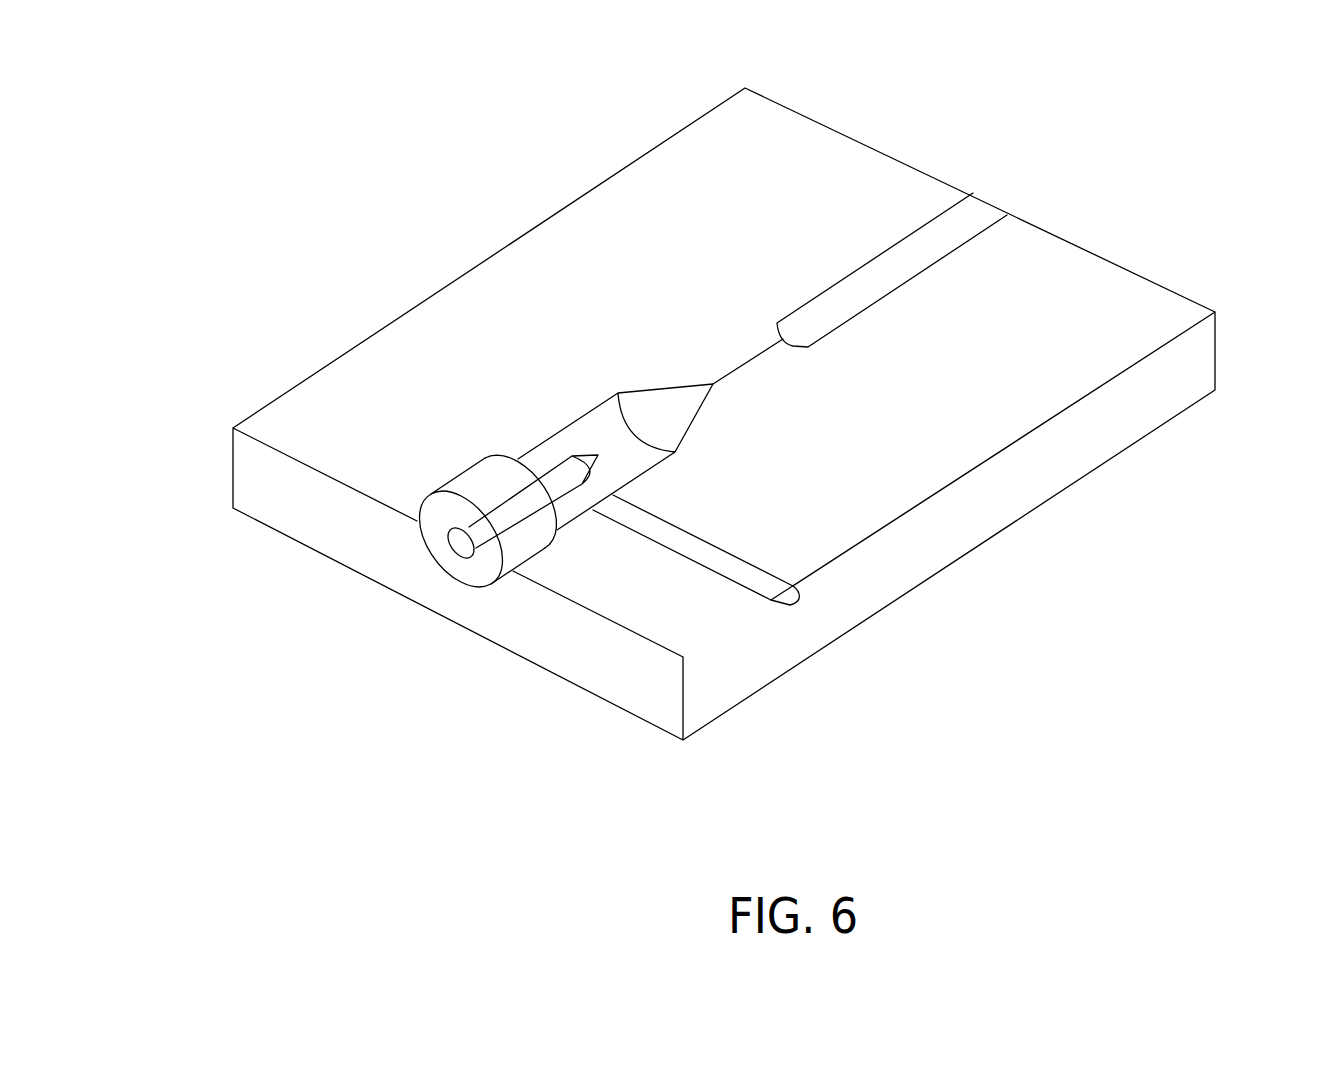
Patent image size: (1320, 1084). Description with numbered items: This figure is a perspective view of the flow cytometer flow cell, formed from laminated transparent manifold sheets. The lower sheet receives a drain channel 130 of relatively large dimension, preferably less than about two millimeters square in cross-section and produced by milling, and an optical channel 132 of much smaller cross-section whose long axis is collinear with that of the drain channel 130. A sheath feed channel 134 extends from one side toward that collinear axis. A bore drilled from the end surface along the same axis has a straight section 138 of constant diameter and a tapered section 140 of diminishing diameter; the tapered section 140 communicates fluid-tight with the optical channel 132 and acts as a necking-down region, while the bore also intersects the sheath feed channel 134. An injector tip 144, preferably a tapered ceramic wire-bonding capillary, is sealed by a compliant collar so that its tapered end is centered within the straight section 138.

The drain channel 130 is at (970, 221).
The optical channel 132 is at (760, 357).
The sheath feed channel 134 is at (797, 585).
The straight section 138 is at (486, 480).
The tapered section 140 is at (660, 393).
The injector tip 144 is at (460, 547).